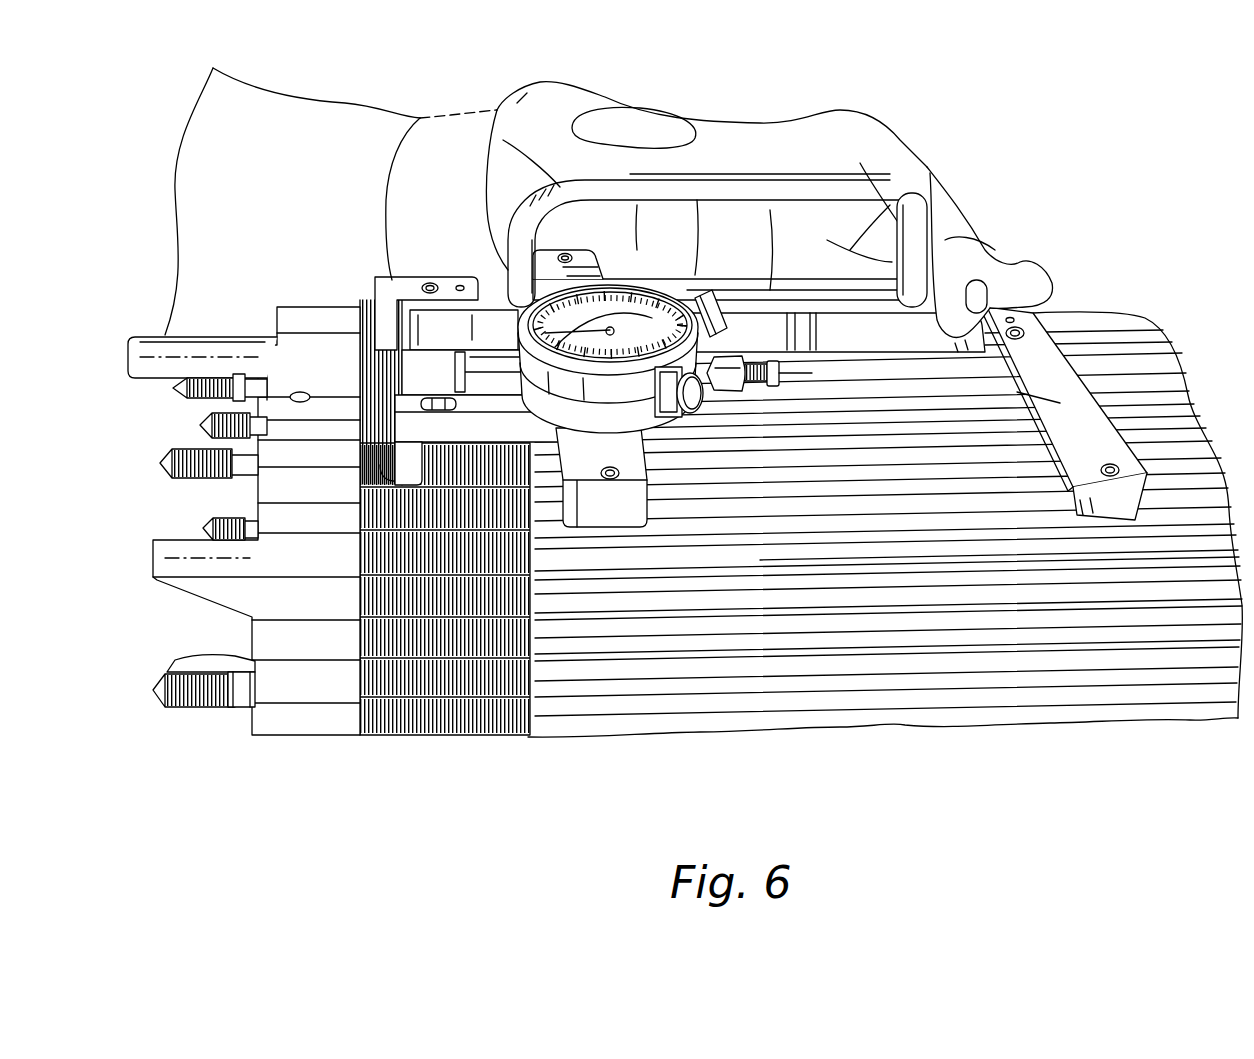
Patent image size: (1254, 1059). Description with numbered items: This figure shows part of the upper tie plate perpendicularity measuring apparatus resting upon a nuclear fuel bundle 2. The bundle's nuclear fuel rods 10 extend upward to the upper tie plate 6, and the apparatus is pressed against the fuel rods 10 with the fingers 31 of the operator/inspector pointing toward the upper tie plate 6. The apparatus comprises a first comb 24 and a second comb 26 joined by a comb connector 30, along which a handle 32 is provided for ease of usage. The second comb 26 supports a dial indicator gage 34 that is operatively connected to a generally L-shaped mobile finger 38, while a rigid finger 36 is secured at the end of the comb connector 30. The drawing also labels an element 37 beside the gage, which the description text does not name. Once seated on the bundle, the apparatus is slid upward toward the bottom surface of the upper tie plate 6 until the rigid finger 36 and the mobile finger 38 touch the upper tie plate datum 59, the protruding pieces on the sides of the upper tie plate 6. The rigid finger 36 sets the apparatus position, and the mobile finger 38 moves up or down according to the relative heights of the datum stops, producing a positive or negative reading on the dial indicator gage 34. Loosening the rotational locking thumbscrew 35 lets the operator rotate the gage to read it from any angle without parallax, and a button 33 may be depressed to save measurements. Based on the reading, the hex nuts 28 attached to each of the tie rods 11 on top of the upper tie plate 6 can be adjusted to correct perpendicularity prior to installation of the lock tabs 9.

The nuclear fuel bundle 2 is at (885, 572).
The upper tie plate 6 is at (225, 554).
The lock tabs 9 is at (187, 668).
The nuclear fuel rods 10 is at (1087, 771).
The tie rods 11 is at (173, 692).
The first comb 24 is at (1093, 440).
The second comb 26 is at (610, 507).
The hex nuts 28 is at (238, 690).
The comb connector 30 is at (733, 303).
The fingers 31 is at (955, 230).
The handle 32 is at (727, 193).
The button 33 is at (690, 398).
The dial indicator gage 34 is at (633, 310).
The rotational locking thumbscrew 35 is at (737, 332).
The rigid finger 36 is at (388, 308).
The adjusting screw 37 is at (785, 372).
The mobile finger 38 is at (367, 463).
The upper tie plate datum 59 is at (287, 480).